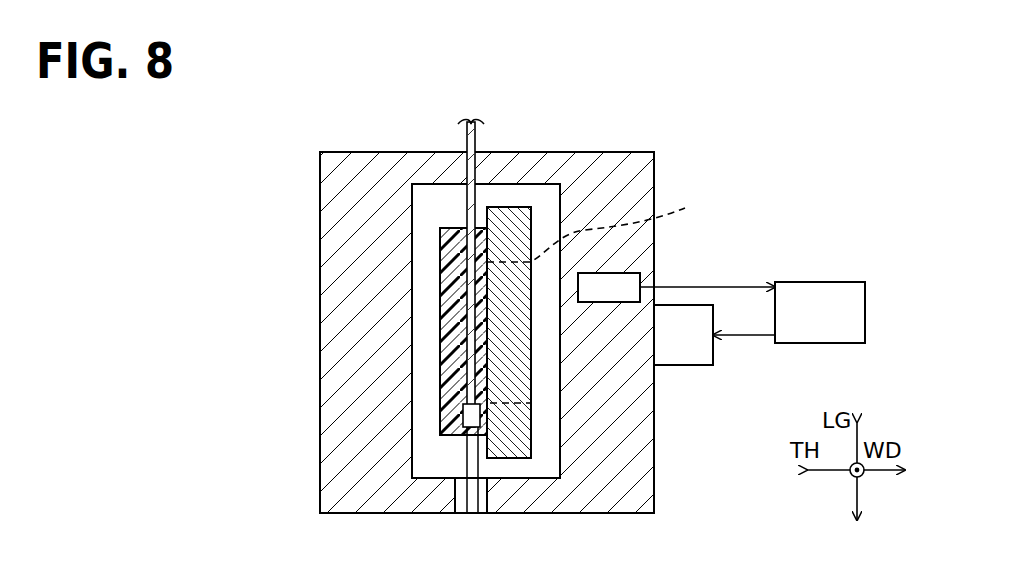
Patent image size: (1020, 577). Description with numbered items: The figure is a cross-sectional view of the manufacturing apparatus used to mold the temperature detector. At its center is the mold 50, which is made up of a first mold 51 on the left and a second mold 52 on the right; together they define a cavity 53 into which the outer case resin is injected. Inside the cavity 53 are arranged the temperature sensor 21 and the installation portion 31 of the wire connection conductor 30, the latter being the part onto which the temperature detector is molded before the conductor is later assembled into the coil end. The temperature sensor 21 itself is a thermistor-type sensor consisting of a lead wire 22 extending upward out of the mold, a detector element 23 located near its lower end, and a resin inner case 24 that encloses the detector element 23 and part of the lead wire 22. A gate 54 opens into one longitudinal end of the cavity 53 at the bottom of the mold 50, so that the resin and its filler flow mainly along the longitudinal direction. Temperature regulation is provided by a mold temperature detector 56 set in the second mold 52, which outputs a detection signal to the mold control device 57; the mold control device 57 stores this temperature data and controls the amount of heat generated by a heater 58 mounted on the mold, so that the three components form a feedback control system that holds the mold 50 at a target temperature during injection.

The mold 50 is at (576, 142).
The first mold 51 is at (320, 172).
The second mold 52 is at (654, 172).
The cavity 53 is at (412, 232).
The gate 54 is at (470, 513).
The temperature sensor 21 is at (432, 280).
The lead wire 22 is at (464, 138).
The detector element 23 is at (463, 412).
The inner case 24 is at (440, 335).
The wire connection conductor 30 is at (601, 296).
The installation portion 31 is at (531, 422).
The mold temperature detector 56 is at (622, 273).
The mold control device 57 is at (800, 282).
The heater 58 is at (690, 365).